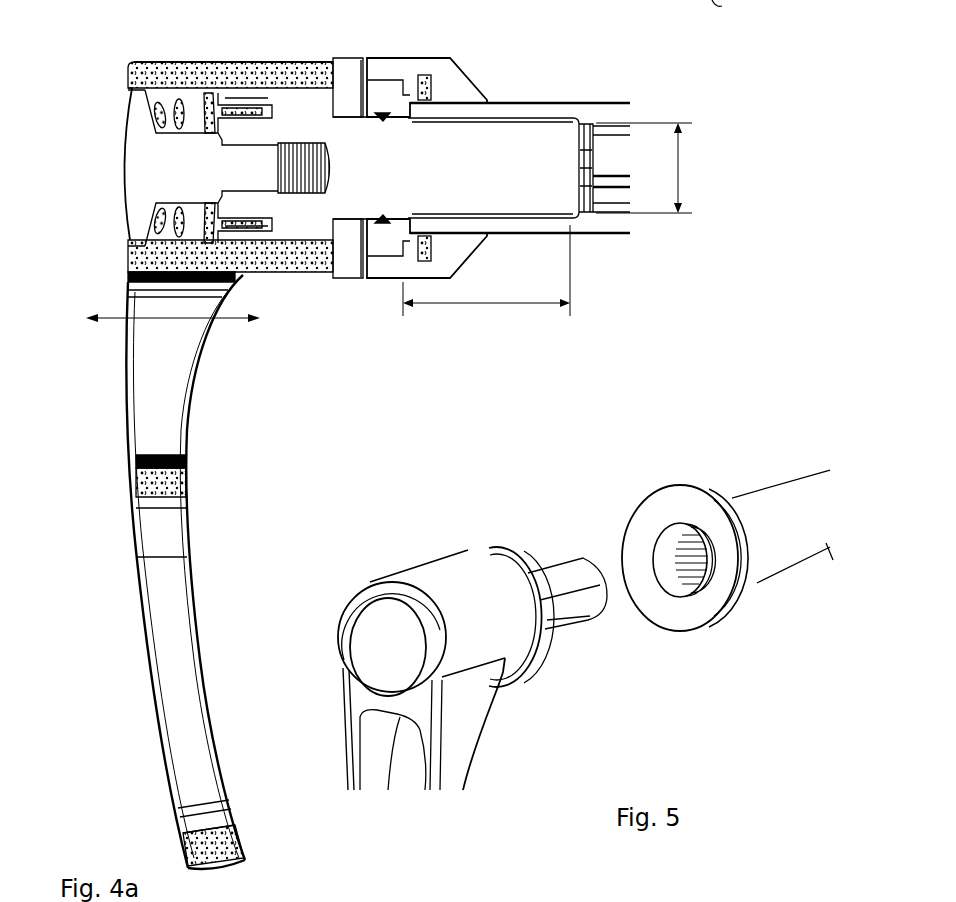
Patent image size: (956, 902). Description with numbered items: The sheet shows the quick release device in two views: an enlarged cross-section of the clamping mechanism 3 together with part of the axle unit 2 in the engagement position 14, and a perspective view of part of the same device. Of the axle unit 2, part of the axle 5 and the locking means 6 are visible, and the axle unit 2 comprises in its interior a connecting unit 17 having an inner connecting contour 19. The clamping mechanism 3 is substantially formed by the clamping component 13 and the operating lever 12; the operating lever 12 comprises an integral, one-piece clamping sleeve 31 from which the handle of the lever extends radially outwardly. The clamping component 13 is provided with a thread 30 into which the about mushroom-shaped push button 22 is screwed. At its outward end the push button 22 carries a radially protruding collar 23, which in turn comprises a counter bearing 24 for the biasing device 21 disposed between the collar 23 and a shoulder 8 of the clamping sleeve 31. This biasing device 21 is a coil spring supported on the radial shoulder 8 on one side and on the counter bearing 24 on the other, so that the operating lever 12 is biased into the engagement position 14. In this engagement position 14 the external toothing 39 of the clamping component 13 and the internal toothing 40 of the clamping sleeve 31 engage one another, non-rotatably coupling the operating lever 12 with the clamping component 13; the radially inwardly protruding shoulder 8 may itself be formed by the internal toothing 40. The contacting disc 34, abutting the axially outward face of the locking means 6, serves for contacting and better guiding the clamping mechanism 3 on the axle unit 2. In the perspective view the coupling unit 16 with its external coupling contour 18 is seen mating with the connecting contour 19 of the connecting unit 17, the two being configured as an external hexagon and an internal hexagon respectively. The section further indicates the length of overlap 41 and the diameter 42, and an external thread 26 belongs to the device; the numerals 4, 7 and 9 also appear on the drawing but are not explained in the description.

In FIG. 5, the axle unit 2 is at (779, 672).
In FIG. 4A, the clamping mechanism 3 is at (324, 322).
In FIG. 5, the clamping mechanism 3 is at (312, 571).
In FIG. 4A, the width of handle 4 is at (155, 322).
In FIG. 5, the axle 5 is at (830, 547).
In FIG. 4A, the locking means 6 is at (388, 66).
In FIG. 5, the locking means 6 is at (655, 512).
In FIG. 4A, the connecting section 7 is at (396, 322).
In FIG. 4A, the shoulder 8 is at (235, 240).
In FIG. 4A, the tool head 9 is at (703, 6).
In FIG. 4A, the operating lever 12 is at (146, 404).
In FIG. 5, the operating lever 12 is at (348, 756).
In FIG. 5, the clamping component 13 is at (503, 526).
In FIG. 4A, the engagement position 14 is at (258, 46).
In FIG. 4A, the coupling unit 16 is at (521, 155).
In FIG. 5, the coupling unit 16 is at (551, 550).
In FIG. 4A, the connecting unit 17 is at (531, 237).
In FIG. 5, the connecting unit 17 is at (653, 590).
In FIG. 5, the coupling contour 18 is at (580, 624).
In FIG. 5, the connecting contour 19 is at (655, 546).
In FIG. 4A, the biasing device 21 is at (178, 100).
In FIG. 4A, the push button 22 is at (135, 143).
In FIG. 5, the push button 22 is at (375, 645).
In FIG. 4A, the collar 23 is at (123, 113).
In FIG. 4A, the counter bearing 24 is at (157, 236).
In FIG. 4A, the external thread 26 is at (717, 0).
In FIG. 4A, the thread 30 is at (334, 176).
In FIG. 4A, the clamping sleeve 31 is at (150, 62).
In FIG. 5, the clamping sleeve 31 is at (440, 578).
In FIG. 4A, the contacting disc 34 is at (349, 70).
In FIG. 5, the contacting disc 34 is at (490, 545).
In FIG. 4A, the external toothing 39 is at (247, 107).
In FIG. 4A, the internal toothing 40 is at (242, 98).
In FIG. 4A, the length of overlap 41 is at (480, 305).
In FIG. 4A, the diameter 42 is at (690, 173).